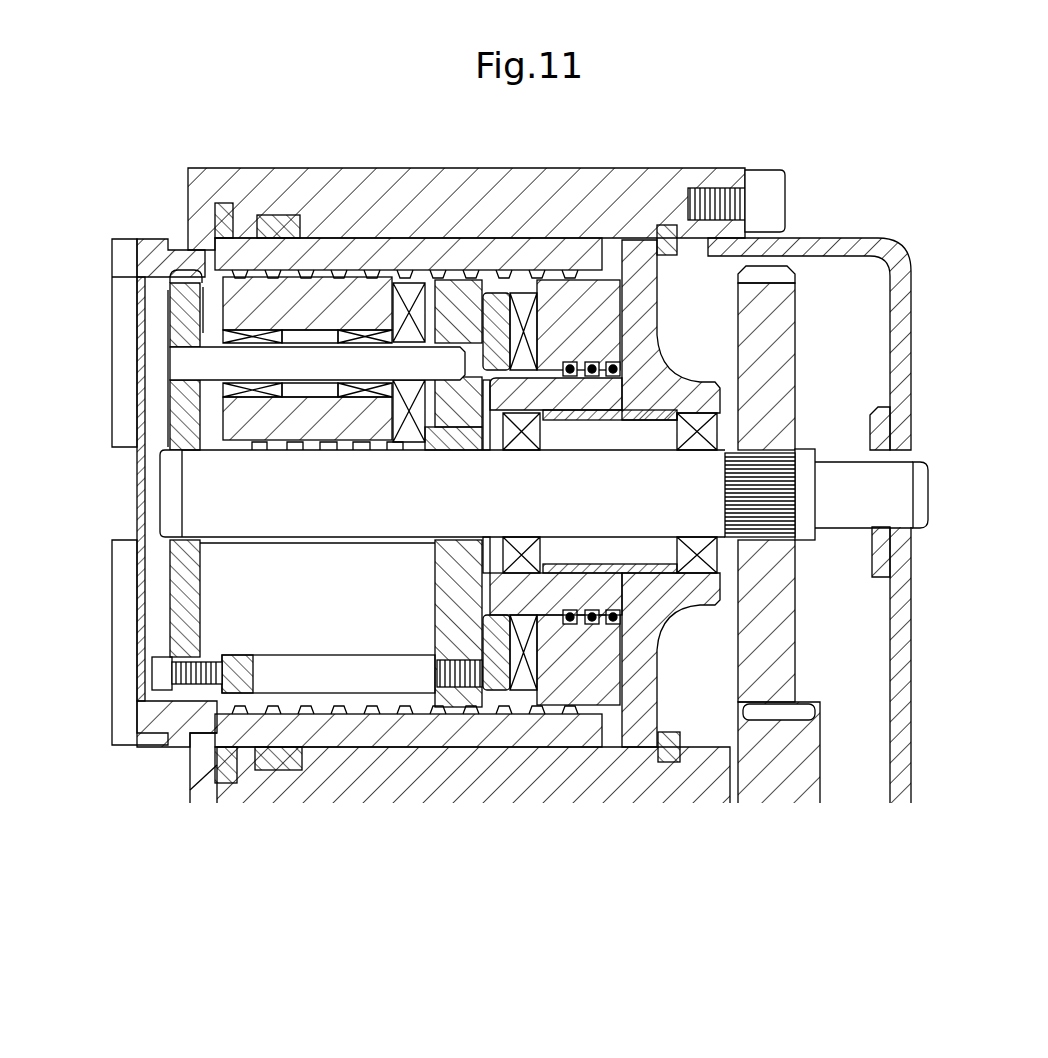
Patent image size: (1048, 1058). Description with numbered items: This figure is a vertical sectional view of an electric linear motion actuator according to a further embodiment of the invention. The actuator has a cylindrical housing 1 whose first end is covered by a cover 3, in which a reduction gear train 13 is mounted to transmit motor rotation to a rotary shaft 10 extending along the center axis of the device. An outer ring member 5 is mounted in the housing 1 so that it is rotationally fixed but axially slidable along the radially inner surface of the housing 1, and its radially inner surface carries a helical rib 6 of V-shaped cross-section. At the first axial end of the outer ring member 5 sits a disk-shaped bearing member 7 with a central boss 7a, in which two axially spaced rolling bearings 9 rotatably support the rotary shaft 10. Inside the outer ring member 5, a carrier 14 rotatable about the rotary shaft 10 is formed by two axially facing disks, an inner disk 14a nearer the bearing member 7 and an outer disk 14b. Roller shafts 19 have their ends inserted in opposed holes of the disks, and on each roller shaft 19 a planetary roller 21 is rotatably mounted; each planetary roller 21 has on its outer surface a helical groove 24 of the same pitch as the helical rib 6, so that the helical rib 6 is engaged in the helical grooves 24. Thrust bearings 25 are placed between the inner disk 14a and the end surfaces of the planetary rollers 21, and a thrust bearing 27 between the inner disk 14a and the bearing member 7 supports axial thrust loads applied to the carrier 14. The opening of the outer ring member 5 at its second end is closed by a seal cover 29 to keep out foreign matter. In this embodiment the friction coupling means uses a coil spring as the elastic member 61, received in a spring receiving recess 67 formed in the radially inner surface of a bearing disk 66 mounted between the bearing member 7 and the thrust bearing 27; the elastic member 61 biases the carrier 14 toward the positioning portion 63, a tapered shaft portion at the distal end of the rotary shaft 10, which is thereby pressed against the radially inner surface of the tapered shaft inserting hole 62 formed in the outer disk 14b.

The housing 1 is at (191, 160).
The cover 3 is at (908, 335).
The outer ring member 5 is at (316, 252).
The helical rib 6 is at (359, 275).
The bearing member 7 is at (640, 268).
The boss 7a is at (560, 398).
The rolling bearings 9 is at (693, 420).
The rotary shaft 10 is at (481, 523).
The reduction gear train 13 is at (810, 649).
The carrier 14 is at (329, 703).
The inner disk 14a is at (443, 625).
The outer disk 14b is at (185, 597).
The roller shaft 19 is at (212, 364).
The planetary roller 21 is at (284, 285).
The helical groove 24 is at (243, 238).
The thrust bearings 25 is at (401, 452).
The thrust bearing 27 is at (520, 300).
The seal cover 29 is at (136, 327).
The elastic member 61 is at (588, 368).
The tapered shaft inserting hole 62 is at (178, 467).
The positioning portion 63 is at (178, 498).
The bearing disk 66 is at (580, 298).
The spring receiving recess 67 is at (620, 367).